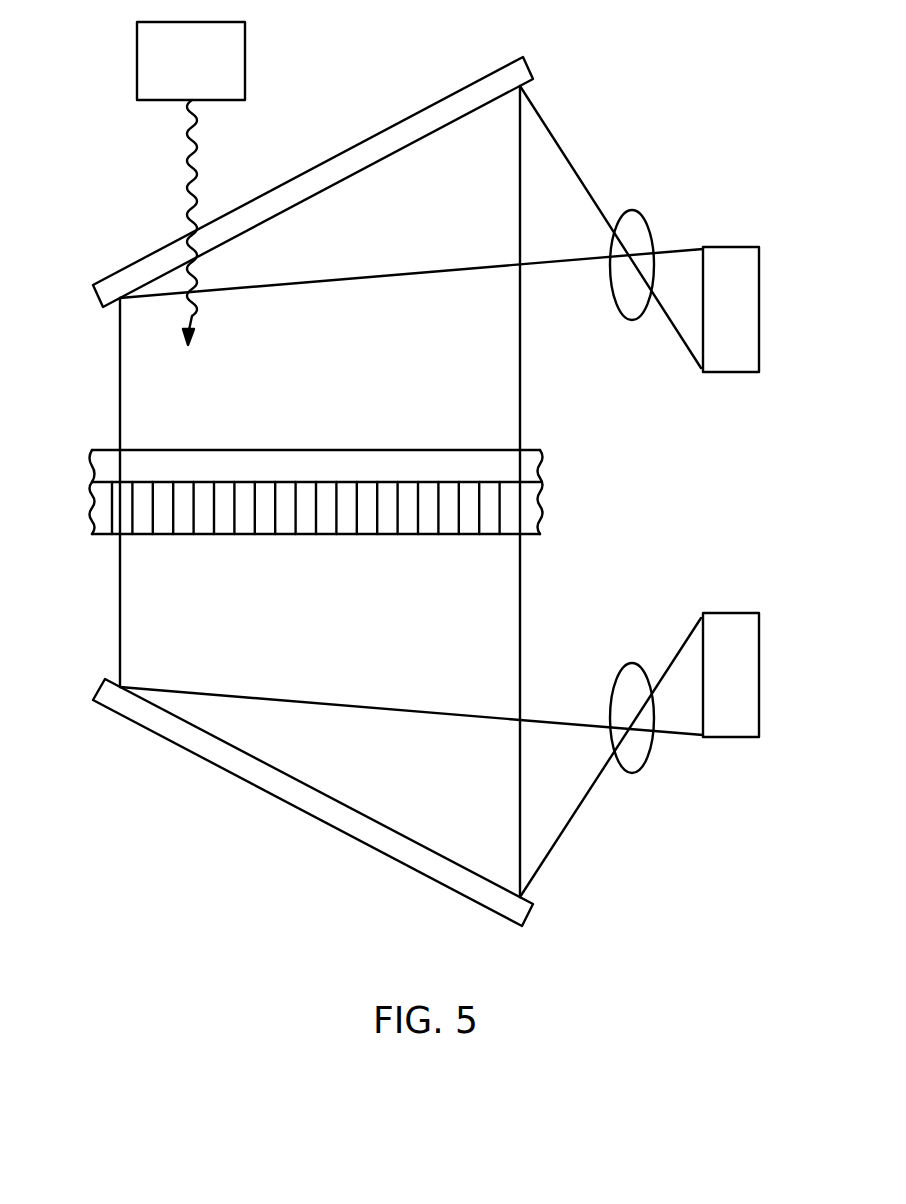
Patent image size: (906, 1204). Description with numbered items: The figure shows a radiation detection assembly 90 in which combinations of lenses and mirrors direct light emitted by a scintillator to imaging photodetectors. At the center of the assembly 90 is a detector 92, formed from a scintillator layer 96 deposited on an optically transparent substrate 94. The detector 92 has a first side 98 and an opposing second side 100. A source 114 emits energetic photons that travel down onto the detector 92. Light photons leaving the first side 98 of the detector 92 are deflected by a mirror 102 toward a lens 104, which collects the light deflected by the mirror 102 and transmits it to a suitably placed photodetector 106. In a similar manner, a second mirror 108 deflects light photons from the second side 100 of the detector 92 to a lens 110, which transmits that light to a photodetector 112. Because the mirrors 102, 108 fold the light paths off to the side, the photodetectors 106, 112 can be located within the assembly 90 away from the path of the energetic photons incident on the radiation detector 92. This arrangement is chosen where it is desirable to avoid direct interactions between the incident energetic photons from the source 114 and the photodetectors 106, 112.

The assembly 90 is at (645, 32).
The detector 92 is at (560, 494).
The optically transparent substrate 94 is at (90, 465).
The scintillator layer 96 is at (90, 517).
The first side 98 is at (508, 450).
The second side 100 is at (508, 534).
The mirror 102 is at (428, 107).
The lens 104 is at (632, 210).
The photodetector 106 is at (728, 372).
The second mirror 108 is at (351, 838).
The lens 110 is at (630, 663).
The photodetector 112 is at (728, 738).
The source 114 is at (245, 62).